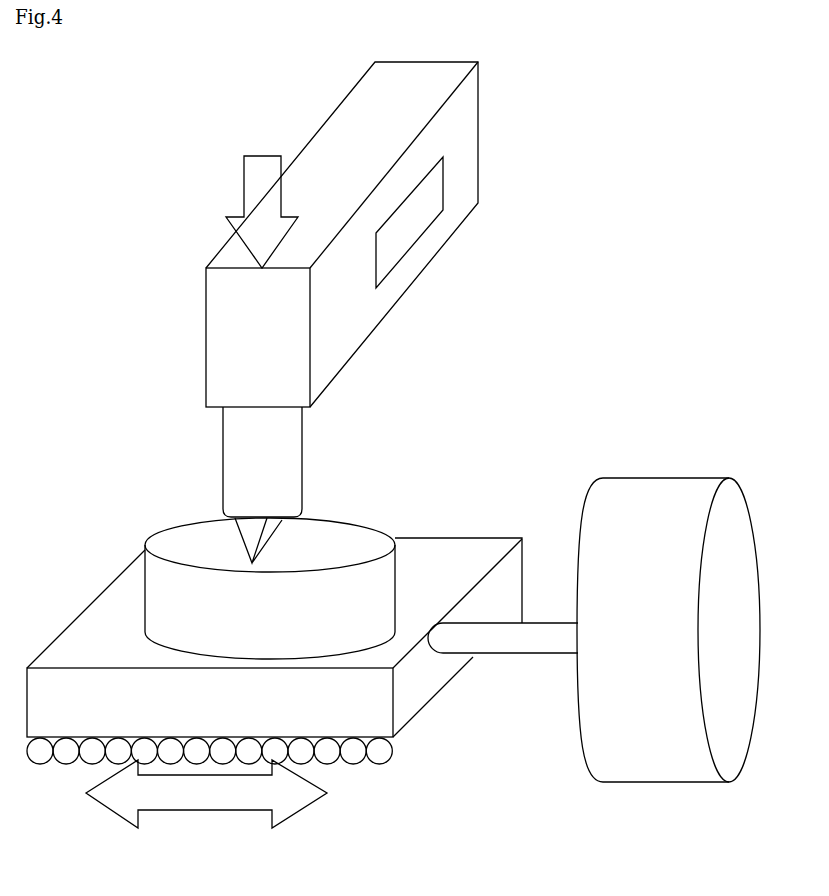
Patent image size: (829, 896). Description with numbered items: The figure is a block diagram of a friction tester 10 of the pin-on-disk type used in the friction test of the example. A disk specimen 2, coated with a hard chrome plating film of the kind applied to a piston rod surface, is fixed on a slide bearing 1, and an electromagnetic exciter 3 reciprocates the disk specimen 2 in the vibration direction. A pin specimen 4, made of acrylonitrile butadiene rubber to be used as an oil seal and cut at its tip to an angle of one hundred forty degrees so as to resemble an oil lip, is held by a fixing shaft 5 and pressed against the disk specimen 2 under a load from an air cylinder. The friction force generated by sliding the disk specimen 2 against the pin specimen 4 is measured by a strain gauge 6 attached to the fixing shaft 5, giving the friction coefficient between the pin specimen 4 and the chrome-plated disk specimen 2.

The slide bearing 1 is at (78, 630).
The disk specimen 2 is at (173, 540).
The electromagnetic exciter 3 is at (653, 502).
The pin specimen 4 is at (281, 532).
The fixing shaft 5 is at (223, 332).
The strain gauge 6 is at (398, 233).
The friction tester 10 is at (673, 210).